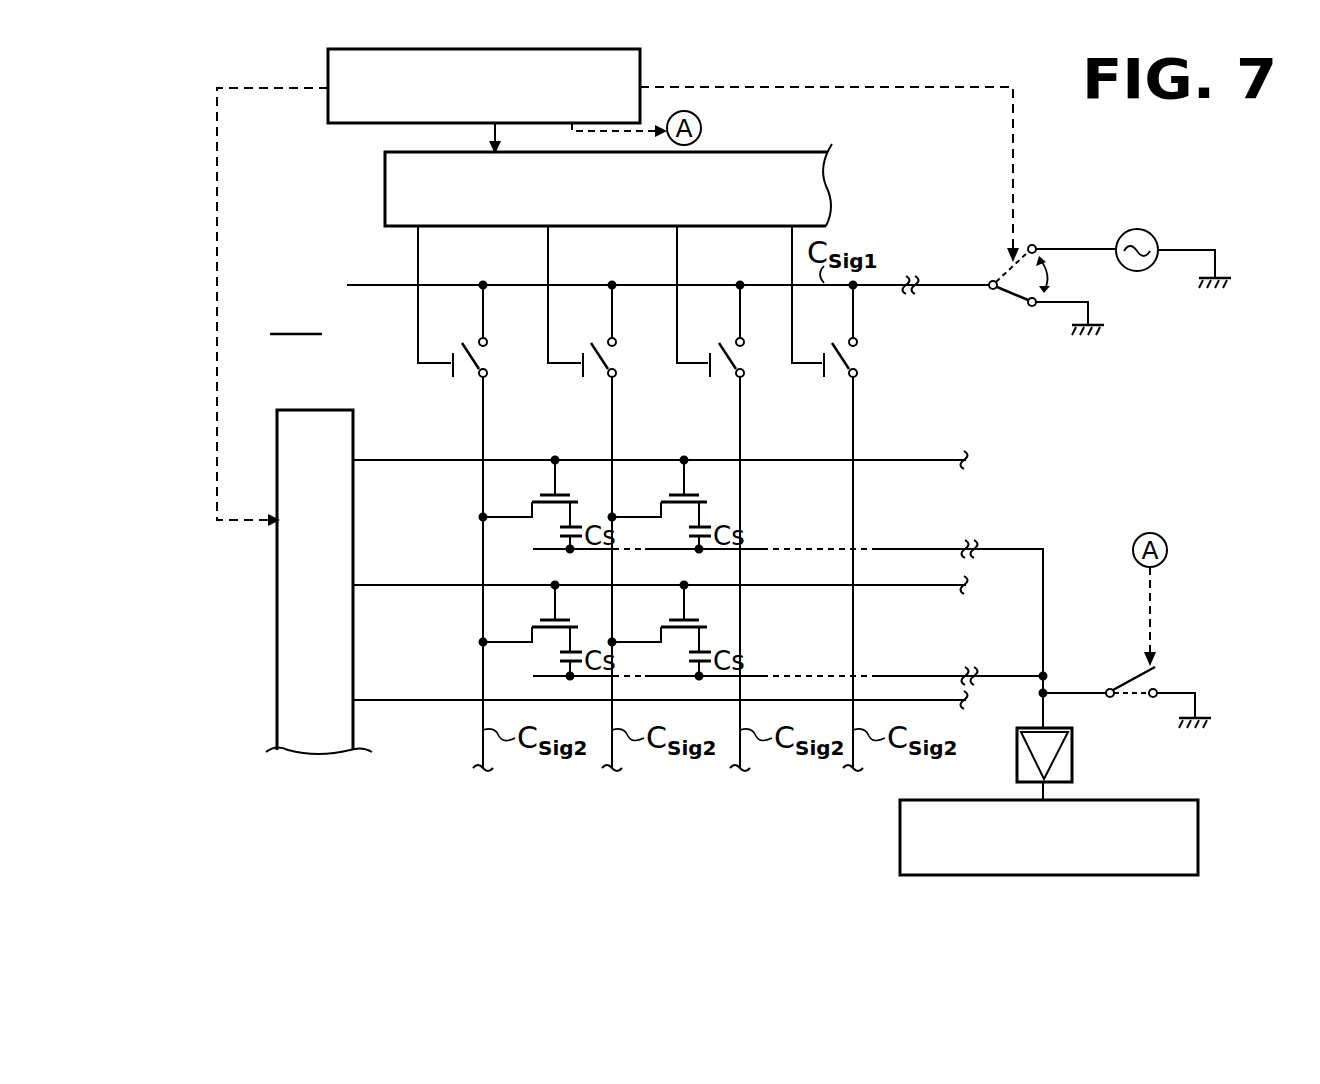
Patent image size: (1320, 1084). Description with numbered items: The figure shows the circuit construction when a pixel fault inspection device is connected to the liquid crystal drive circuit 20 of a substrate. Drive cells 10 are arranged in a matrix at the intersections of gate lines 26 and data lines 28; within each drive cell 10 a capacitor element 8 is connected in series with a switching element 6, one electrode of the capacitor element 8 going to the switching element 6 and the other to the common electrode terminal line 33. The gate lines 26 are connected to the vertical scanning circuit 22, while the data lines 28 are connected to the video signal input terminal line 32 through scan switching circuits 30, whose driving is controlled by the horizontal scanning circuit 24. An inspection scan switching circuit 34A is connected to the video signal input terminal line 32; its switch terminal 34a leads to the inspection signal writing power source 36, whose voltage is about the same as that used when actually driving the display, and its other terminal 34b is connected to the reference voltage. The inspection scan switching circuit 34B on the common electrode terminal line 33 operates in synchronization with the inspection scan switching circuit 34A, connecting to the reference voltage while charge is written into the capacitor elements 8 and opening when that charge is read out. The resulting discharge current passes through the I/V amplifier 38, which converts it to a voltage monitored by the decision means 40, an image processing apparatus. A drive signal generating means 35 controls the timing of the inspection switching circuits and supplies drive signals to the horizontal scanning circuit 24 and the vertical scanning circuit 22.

The switching element 6 is at (572, 482).
The capacitor element 8 is at (559, 532).
The drive cell 10 is at (540, 498).
The liquid crystal drive circuit 20 is at (296, 317).
The vertical scanning circuit 22 is at (277, 630).
The horizontal scanning circuit 24 is at (735, 227).
The gate line 26 is at (412, 462).
The data line 28 is at (483, 408).
The scan switching circuit 30 is at (470, 348).
The video signal input terminal line 32 is at (892, 284).
The common electrode terminal line 33 is at (905, 548).
The inspection scan switching circuit 34A is at (1007, 276).
The switch terminal 34a is at (1033, 245).
The switch terminal 34b is at (1034, 308).
The inspection scan switching circuit 34B is at (1112, 688).
The drive signal generating means 35 is at (640, 51).
The inspection signal writing power source 36 is at (1135, 229).
The I/V amplifier 38 is at (1072, 755).
The decision means 40 is at (1198, 832).